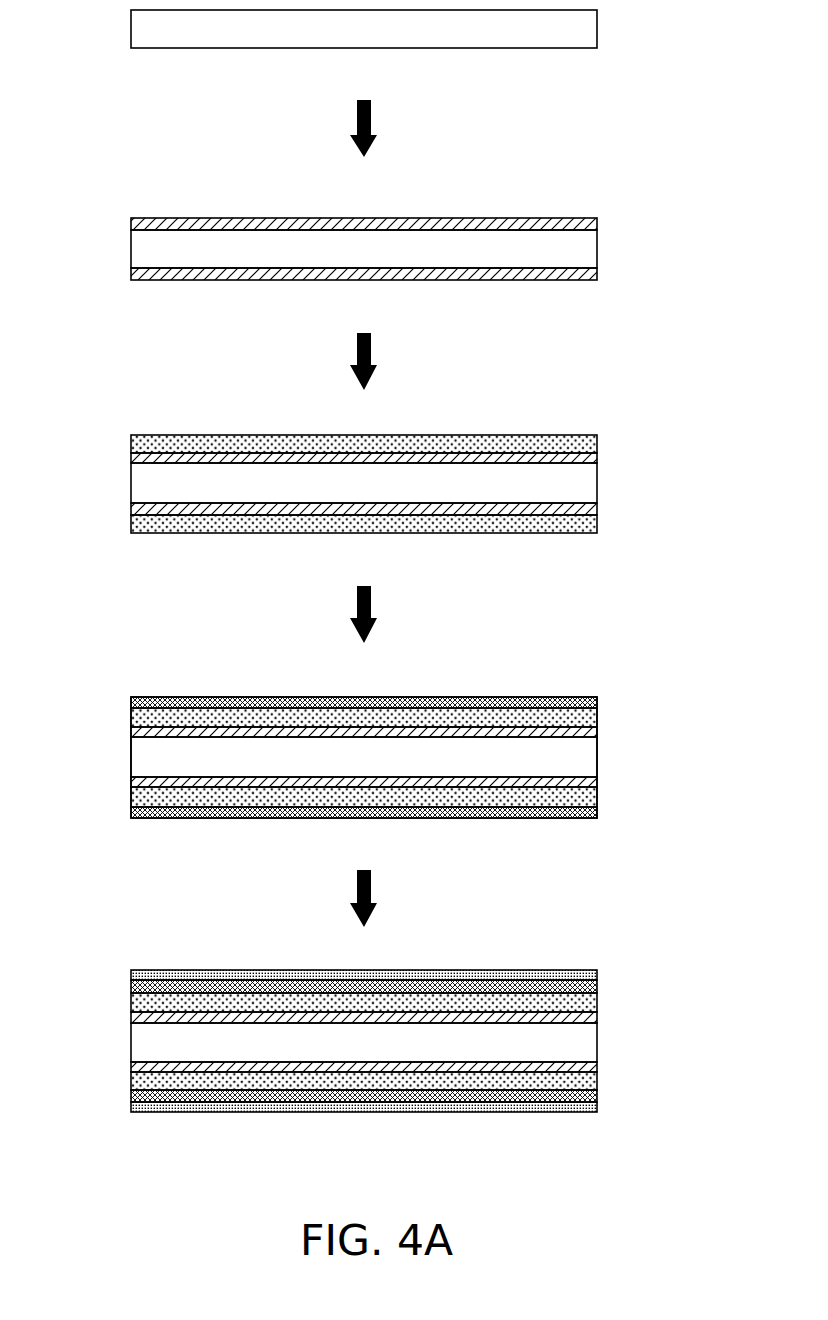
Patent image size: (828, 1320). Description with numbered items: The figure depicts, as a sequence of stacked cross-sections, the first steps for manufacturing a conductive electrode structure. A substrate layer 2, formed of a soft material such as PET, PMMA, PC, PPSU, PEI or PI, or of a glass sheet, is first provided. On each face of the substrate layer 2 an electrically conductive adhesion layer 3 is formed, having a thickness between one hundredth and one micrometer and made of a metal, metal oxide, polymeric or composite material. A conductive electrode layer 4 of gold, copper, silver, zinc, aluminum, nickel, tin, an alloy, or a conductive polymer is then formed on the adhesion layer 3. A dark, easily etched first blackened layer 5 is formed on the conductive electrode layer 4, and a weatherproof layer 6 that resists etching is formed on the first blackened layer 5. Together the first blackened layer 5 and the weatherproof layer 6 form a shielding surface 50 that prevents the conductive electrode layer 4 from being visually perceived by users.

The substrate layer 2 is at (580, 35).
The adhesion layer 3 is at (575, 225).
The conductive electrode layer 4 is at (140, 445).
The first blackened layer 5 is at (267, 698).
The weatherproof layer 6 is at (432, 977).
The shielding surface 50 is at (466, 678).